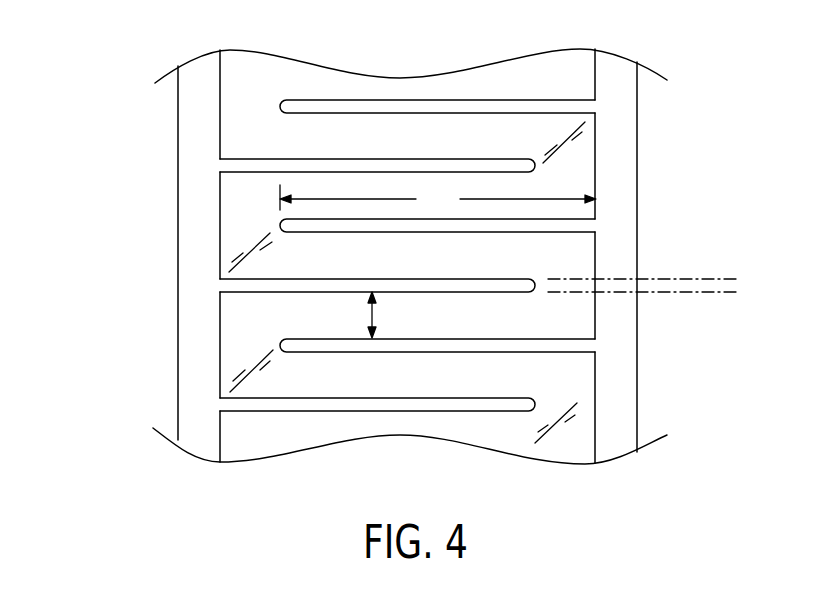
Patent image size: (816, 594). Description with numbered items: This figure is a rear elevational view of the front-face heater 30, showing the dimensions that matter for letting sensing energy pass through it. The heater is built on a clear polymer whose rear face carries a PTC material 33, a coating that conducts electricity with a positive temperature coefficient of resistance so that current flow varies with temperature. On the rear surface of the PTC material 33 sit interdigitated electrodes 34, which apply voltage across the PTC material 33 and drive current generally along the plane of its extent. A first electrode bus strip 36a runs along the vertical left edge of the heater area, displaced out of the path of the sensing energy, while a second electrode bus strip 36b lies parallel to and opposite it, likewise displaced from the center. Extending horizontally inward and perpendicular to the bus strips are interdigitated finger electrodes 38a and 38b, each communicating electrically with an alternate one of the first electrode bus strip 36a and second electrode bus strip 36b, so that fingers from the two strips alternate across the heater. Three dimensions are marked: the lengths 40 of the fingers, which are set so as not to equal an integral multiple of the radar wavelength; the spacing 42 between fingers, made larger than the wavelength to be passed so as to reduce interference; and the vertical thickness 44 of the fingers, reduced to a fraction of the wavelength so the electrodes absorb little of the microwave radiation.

The front-face heater 30 is at (115, 197).
The PTC material 33 is at (243, 232).
The interdigitated electrodes 34 is at (242, 173).
The first electrode bus strip 36a is at (197, 233).
The second electrode bus strip 36b is at (624, 217).
The interdigitated finger electrodes 38a is at (260, 163).
The interdigitated finger electrodes 38b is at (405, 105).
The lengths 40 is at (438, 200).
The spacing 42 is at (375, 314).
The vertical thickness 44 is at (728, 285).